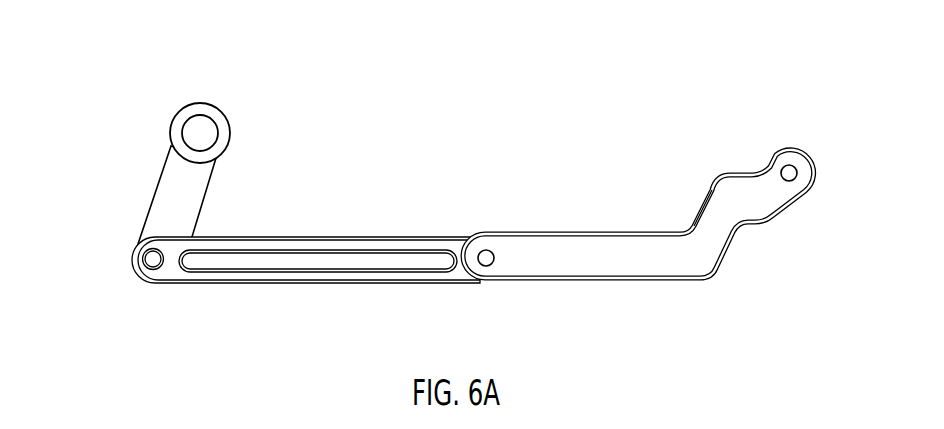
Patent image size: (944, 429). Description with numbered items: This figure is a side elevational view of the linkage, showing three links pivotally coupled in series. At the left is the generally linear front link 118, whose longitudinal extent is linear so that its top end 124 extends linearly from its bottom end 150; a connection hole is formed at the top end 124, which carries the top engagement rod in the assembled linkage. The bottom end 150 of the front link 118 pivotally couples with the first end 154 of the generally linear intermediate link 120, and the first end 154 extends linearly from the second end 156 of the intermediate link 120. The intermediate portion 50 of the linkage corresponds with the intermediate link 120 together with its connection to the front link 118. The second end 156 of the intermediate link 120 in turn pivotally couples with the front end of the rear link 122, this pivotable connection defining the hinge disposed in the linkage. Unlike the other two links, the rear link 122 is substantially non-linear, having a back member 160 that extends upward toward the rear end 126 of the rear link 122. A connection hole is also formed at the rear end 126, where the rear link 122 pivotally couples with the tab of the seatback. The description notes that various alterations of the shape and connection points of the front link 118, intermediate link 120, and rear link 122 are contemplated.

The intermediate portion 50 is at (141, 286).
The front link 118 is at (170, 185).
The intermediate link 120 is at (307, 272).
The rear link 122 is at (585, 258).
The top end 124 is at (208, 104).
The rear end 126 is at (745, 192).
The bottom end 150 is at (132, 243).
The first end 154 is at (179, 272).
The second end 156 is at (459, 283).
The back member 160 is at (720, 227).